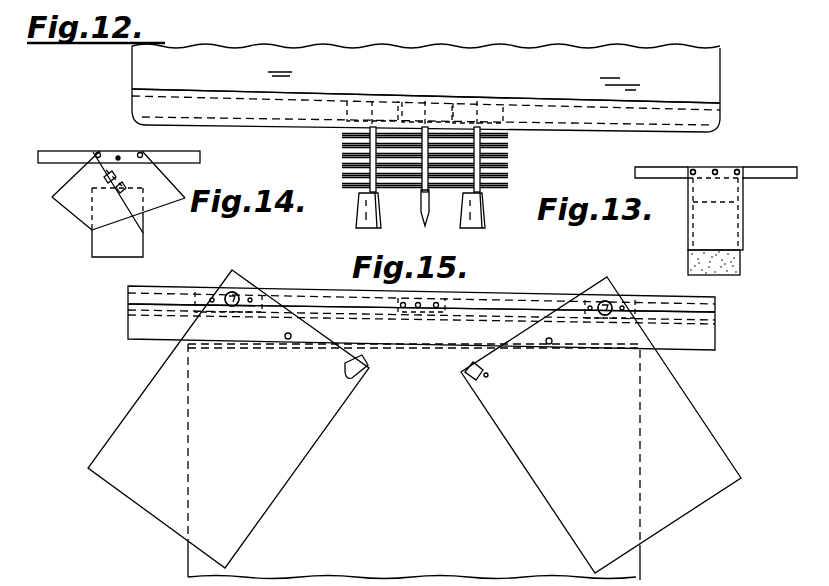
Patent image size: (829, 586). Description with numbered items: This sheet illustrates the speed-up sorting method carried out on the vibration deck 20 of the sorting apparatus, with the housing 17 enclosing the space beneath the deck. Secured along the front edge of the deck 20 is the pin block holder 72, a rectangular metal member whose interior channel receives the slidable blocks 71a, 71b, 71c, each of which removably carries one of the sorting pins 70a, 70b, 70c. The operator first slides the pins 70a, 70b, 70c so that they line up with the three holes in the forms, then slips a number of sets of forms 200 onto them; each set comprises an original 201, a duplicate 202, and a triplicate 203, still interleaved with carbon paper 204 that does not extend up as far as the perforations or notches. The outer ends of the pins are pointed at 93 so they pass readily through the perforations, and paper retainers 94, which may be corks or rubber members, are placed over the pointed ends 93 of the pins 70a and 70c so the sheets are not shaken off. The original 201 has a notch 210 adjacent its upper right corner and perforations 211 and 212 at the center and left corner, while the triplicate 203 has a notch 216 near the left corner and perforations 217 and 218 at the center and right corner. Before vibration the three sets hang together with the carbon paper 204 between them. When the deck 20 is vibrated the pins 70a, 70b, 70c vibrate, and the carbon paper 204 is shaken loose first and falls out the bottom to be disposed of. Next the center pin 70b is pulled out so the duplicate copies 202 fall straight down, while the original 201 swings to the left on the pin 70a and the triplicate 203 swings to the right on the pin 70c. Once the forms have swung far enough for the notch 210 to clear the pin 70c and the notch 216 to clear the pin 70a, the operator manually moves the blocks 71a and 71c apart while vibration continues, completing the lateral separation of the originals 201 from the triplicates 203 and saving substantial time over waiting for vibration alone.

In FIG. 15, the housing 17 is at (418, 467).
In FIG. 12, the vibration deck 20 is at (447, 77).
In FIG. 15, the vibration deck 20 is at (700, 336).
In FIG. 12, the pin block holder 72 is at (236, 100).
In FIG. 15, the pin block holder 72 is at (300, 293).
In FIG. 12, the first slidable block 71a is at (382, 79).
In FIG. 15, the first slidable block 71a is at (172, 280).
In FIG. 12, the second slidable block 71b is at (466, 93).
In FIG. 15, the second slidable block 71b is at (516, 285).
In FIG. 12, the third slidable block 71c is at (538, 89).
In FIG. 15, the third slidable block 71c is at (686, 287).
In FIG. 12, the first sorting pin 70a is at (340, 216).
In FIG. 13, the first sorting pin 70a is at (707, 153).
In FIG. 14, the first sorting pin 70a is at (105, 140).
In FIG. 15, the first sorting pin 70a is at (209, 275).
In FIG. 12, the second sorting pin 70b is at (417, 247).
In FIG. 13, the second sorting pin 70b is at (757, 143).
In FIG. 12, the third sorting pin 70c is at (467, 247).
In FIG. 13, the third sorting pin 70c is at (795, 155).
In FIG. 14, the third sorting pin 70c is at (193, 140).
In FIG. 15, the third sorting pin 70c is at (657, 270).
In FIG. 12, the pointed end 93 is at (428, 218).
In FIG. 12, the paper retainer 94 is at (372, 222).
In FIG. 12, the set of forms 200 is at (335, 143).
In FIG. 12, the original 201 is at (510, 148).
In FIG. 13, the original 201 is at (744, 196).
In FIG. 14, the original 201 is at (75, 208).
In FIG. 15, the original 201 is at (256, 425).
In FIG. 12, the duplicate 202 is at (512, 172).
In FIG. 14, the duplicate 202 is at (120, 253).
In FIG. 12, the triplicate 203 is at (510, 135).
In FIG. 14, the triplicate 203 is at (160, 212).
In FIG. 15, the triplicate 203 is at (614, 433).
In FIG. 12, the carbon paper 204 is at (512, 184).
In FIG. 13, the carbon paper 204 is at (742, 263).
In FIG. 15, the notch 210 is at (366, 364).
In FIG. 15, the perforation 211 is at (226, 310).
In FIG. 15, the perforation 212 is at (291, 334).
In FIG. 15, the notch 216 is at (466, 377).
In FIG. 15, the perforation 217 is at (549, 344).
In FIG. 15, the perforation 218 is at (600, 319).